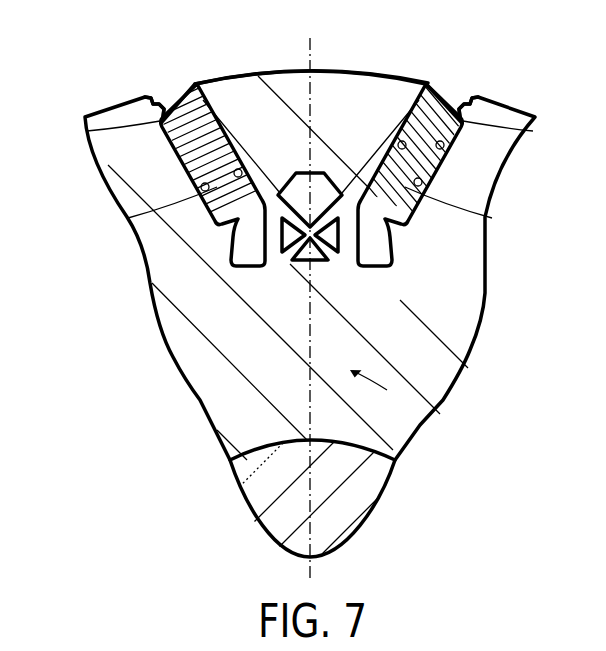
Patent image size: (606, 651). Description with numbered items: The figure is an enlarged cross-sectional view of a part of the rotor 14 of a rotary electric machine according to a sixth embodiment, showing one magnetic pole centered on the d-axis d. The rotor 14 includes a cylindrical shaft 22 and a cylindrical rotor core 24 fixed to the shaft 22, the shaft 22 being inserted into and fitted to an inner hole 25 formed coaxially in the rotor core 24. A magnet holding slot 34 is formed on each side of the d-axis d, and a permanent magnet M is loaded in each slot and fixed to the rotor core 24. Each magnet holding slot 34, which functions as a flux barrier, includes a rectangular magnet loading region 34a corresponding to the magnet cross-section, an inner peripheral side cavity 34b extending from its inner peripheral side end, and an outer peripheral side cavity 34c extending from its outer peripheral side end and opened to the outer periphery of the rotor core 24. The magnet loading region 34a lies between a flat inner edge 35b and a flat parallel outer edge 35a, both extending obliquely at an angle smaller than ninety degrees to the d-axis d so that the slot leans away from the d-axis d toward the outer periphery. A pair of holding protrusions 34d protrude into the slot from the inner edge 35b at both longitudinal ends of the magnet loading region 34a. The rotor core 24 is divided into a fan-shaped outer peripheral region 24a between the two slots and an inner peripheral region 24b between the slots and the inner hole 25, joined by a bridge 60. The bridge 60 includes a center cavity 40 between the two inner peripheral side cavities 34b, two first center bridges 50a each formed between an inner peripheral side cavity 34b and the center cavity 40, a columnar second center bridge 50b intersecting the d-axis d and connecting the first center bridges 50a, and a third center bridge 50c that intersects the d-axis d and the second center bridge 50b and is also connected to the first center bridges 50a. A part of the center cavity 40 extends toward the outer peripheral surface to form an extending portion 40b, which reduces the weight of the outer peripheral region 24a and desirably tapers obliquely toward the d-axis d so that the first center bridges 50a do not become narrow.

The rotor 14 is at (116, 257).
The shaft 22 is at (368, 500).
The rotor core 24 is at (190, 356).
The outer peripheral region 24a is at (324, 106).
The inner peripheral region 24b is at (417, 422).
The inner hole 25 is at (247, 457).
The magnet holding slot 34 is at (233, 130).
The magnet loading region 34a is at (203, 158).
The inner peripheral side cavity 34b is at (232, 254).
The outer peripheral side cavity 34c is at (176, 102).
The holding protrusion 34d is at (195, 133).
The outer edge 35a is at (240, 172).
The inner edge 35b is at (208, 181).
The permanent magnet M is at (197, 182).
The center cavity 40 is at (298, 272).
The extending portion 40b is at (318, 172).
The first center bridge 50a is at (267, 236).
The second center bridge 50b is at (328, 263).
The third center bridge 50c is at (298, 224).
The bridge 60 is at (365, 339).
The d-axis d is at (305, 37).